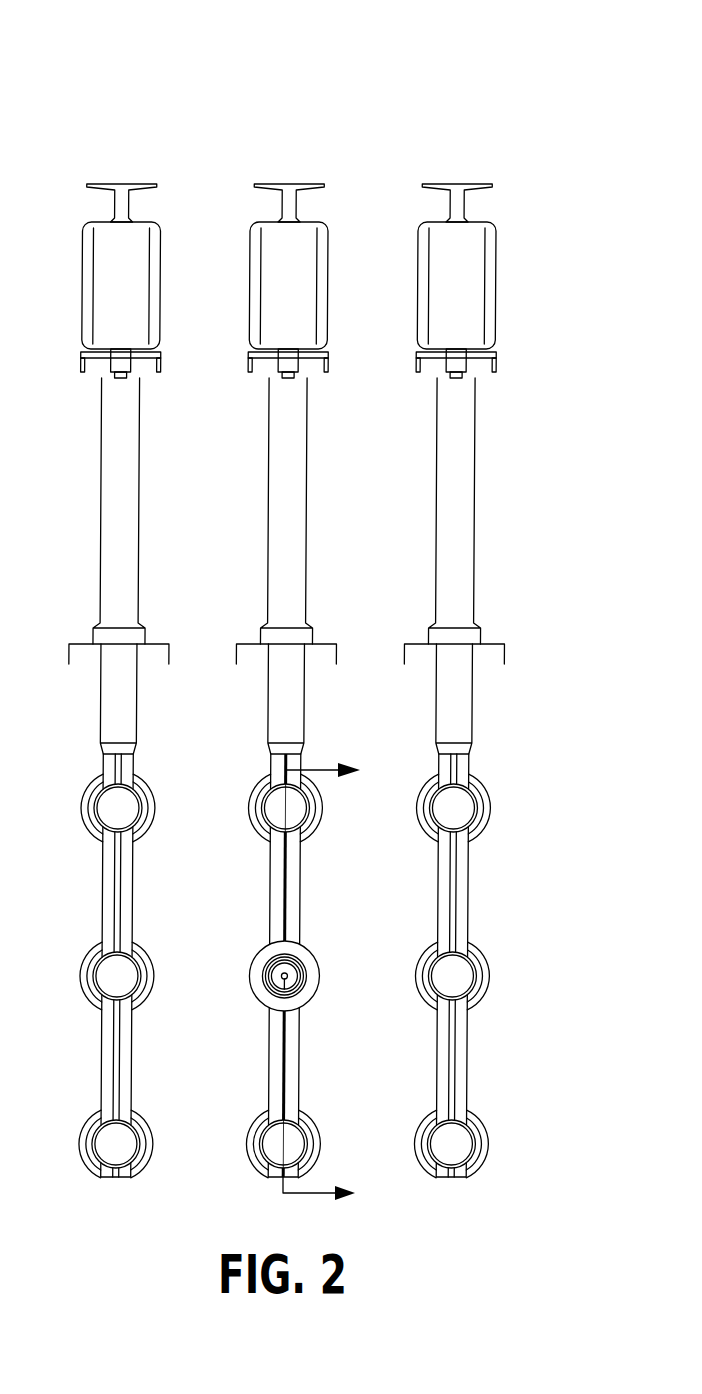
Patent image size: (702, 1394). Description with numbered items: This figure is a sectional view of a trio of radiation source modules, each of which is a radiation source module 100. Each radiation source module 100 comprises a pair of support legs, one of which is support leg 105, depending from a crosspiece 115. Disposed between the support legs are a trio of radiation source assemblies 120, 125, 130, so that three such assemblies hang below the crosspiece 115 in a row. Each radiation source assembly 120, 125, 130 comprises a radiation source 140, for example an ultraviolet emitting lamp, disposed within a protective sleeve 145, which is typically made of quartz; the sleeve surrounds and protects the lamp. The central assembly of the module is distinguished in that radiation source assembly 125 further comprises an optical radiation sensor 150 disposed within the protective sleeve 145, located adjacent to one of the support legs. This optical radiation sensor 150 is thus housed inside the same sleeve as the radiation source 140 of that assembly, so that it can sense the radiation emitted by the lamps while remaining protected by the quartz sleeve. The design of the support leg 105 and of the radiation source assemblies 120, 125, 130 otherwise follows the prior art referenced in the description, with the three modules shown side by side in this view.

The radiation source module 100 is at (287, 604).
The support leg 105 is at (290, 474).
The crosspiece 115 is at (298, 247).
The radiation source assembly 120 is at (286, 797).
The radiation source assembly 125 is at (273, 961).
The radiation source assembly 130 is at (302, 1115).
The radiation source 140 is at (305, 805).
The protective sleeve 145 is at (298, 962).
The optical radiation sensor 150 is at (268, 985).